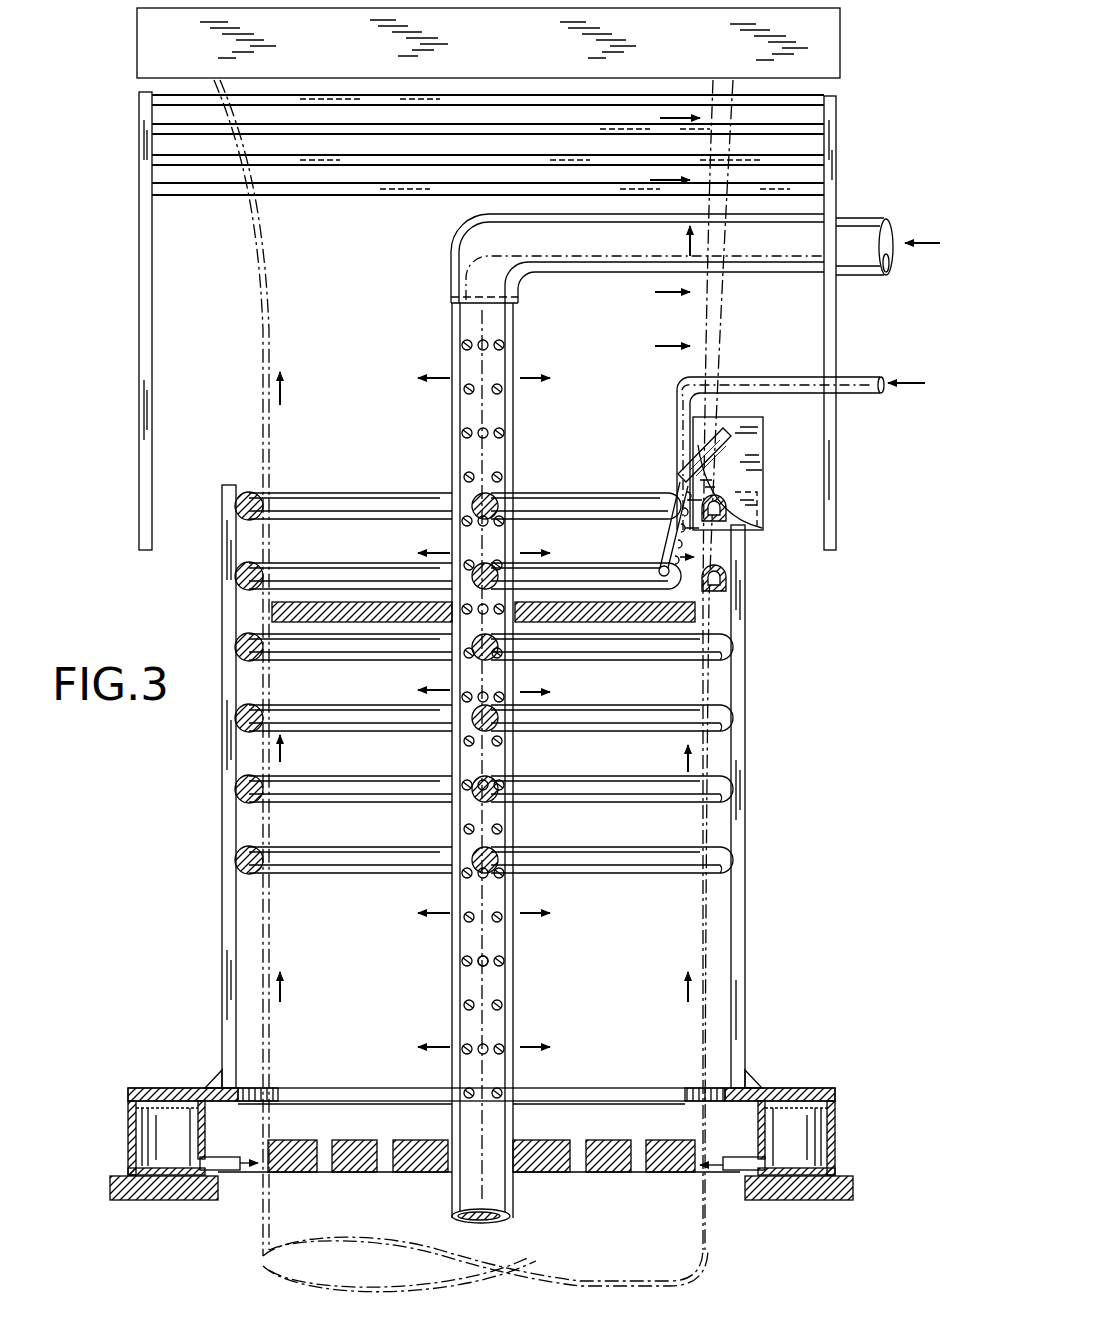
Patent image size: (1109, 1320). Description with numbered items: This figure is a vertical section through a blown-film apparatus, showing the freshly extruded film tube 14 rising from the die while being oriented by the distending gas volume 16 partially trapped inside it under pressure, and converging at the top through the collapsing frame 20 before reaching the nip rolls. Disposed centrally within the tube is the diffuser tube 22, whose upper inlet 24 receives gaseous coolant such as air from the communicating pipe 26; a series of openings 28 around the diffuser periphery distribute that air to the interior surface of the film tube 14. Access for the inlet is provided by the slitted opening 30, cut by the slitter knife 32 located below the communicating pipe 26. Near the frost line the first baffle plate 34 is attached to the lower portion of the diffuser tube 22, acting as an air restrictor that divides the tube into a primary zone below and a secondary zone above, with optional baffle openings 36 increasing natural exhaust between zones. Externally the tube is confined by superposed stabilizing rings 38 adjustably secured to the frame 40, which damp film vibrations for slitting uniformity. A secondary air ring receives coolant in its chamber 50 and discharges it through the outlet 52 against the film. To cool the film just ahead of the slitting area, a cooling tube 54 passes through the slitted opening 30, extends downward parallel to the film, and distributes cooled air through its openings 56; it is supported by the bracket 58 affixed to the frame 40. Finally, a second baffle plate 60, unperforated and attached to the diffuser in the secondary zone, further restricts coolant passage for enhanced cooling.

The film tube 14 is at (745, 915).
The distending gas volume 16 is at (616, 1234).
The collapsing frame 20 is at (147, 176).
The diffuser tube 22 is at (460, 980).
The inlet 24 is at (484, 288).
The communicating pipe 26 is at (860, 218).
The openings 28 is at (500, 961).
The slitted opening 30 is at (730, 330).
The slitter knife 32 is at (722, 445).
The first baffle plate 34 is at (350, 1160).
The baffle openings 36 is at (392, 1160).
The stabilizing rings 38 is at (718, 788).
The frame 40 is at (742, 672).
The chamber 50 is at (163, 1130).
The outlet 52 is at (232, 1148).
The cooling tube 54 is at (684, 486).
The openings 56 is at (668, 535).
The bracket 58 is at (752, 490).
The second baffle plate 60 is at (676, 612).